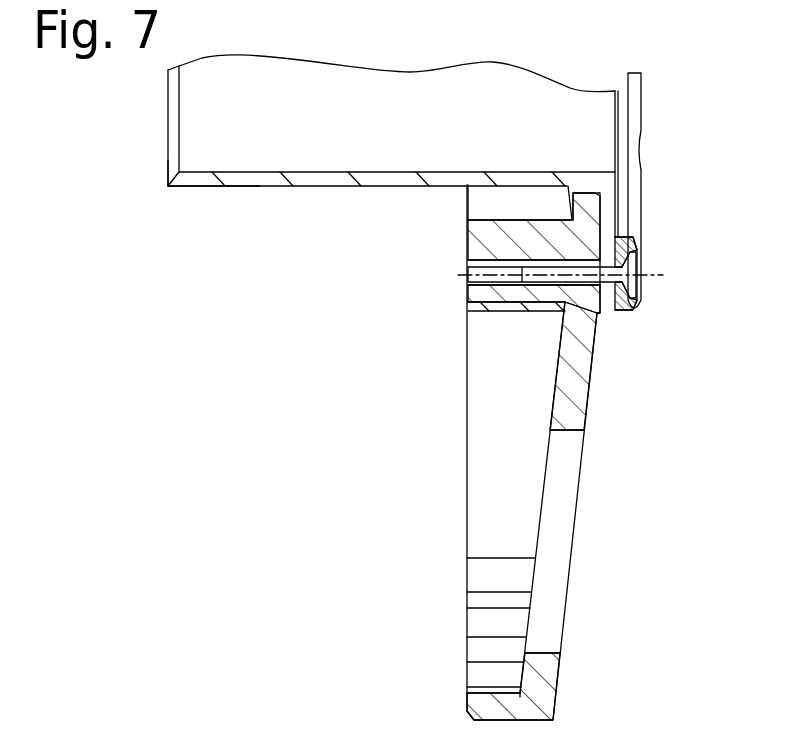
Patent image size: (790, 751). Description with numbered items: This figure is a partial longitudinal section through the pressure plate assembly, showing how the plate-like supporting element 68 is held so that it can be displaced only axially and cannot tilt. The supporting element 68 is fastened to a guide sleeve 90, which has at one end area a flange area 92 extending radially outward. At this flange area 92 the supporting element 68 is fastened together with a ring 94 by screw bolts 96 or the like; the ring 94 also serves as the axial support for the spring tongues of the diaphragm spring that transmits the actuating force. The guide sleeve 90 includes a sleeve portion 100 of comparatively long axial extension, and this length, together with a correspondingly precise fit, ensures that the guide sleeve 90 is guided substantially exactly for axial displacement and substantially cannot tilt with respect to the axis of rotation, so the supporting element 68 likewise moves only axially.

The supporting element 68 is at (597, 367).
The guide sleeve 90 is at (338, 178).
The flange area 92 is at (607, 218).
The ring 94 is at (635, 222).
The screw bolts 96 is at (635, 285).
The sleeve portion 100 is at (238, 178).